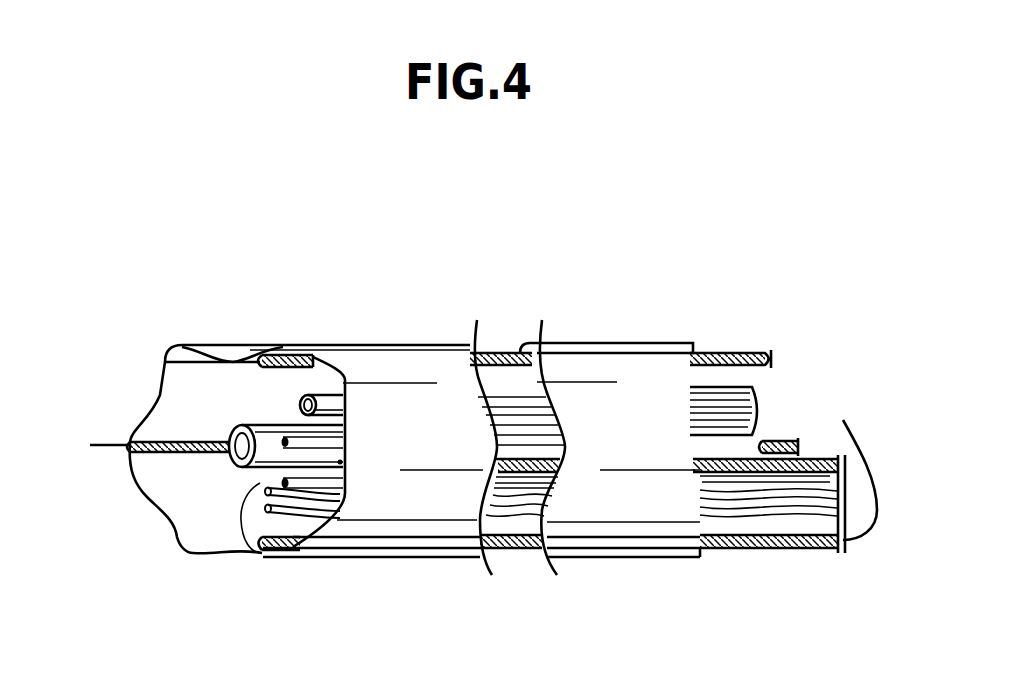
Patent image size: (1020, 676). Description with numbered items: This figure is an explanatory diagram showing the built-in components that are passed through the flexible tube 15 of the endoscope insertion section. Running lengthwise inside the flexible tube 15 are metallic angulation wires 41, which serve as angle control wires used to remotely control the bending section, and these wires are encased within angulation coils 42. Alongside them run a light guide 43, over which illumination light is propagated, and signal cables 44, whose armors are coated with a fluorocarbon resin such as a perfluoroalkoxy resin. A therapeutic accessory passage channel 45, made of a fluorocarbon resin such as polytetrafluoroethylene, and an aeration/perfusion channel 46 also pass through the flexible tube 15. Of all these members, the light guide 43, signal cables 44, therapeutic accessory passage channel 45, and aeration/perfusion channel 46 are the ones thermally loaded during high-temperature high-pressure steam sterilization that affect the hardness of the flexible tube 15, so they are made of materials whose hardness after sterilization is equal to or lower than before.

The flexible tube 15 is at (397, 372).
The angulation wires 41 is at (188, 553).
The angulation coils 42 is at (787, 458).
The light guide 43 is at (327, 403).
The signal cables 44 is at (268, 475).
The therapeutic accessory passage channel 45 is at (262, 440).
The aeration/perfusion channel 46 is at (713, 427).